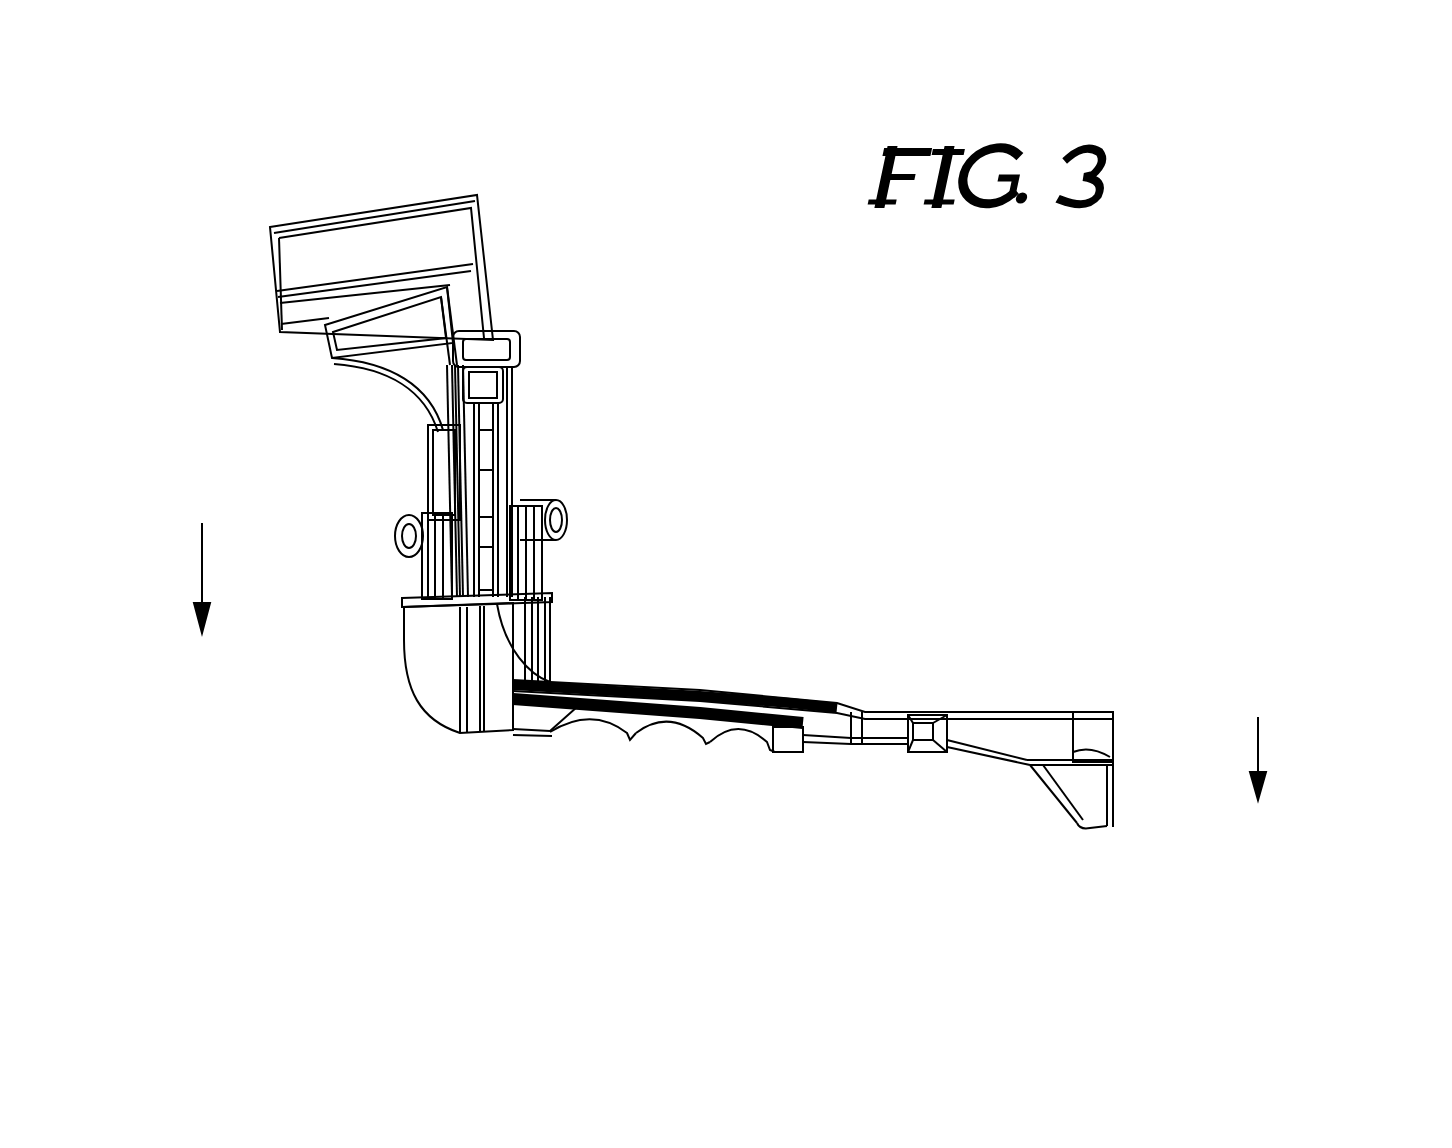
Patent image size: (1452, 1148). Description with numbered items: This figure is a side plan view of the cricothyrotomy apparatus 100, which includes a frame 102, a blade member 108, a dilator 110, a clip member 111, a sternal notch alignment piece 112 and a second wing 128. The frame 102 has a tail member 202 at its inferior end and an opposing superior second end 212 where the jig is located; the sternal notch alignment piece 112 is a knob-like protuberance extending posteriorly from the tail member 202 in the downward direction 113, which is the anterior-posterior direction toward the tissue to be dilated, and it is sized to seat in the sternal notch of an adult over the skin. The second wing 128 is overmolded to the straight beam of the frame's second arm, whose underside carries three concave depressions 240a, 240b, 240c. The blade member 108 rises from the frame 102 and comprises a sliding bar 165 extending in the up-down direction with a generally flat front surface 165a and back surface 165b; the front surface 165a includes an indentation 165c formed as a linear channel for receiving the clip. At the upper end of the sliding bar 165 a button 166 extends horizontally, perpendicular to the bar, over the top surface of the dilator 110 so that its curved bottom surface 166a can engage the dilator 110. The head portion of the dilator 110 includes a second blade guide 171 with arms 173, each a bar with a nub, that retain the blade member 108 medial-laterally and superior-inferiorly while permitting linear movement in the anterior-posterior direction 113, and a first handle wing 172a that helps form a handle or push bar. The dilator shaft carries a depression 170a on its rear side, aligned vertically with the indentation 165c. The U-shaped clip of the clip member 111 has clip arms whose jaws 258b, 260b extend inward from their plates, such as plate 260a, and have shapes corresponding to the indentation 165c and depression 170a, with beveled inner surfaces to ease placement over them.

The apparatus 100 is at (1045, 288).
The frame 102 is at (871, 762).
The blade member 108 is at (518, 432).
The dilator 110 is at (430, 466).
The clip member 111 is at (438, 508).
The sternal notch alignment piece 112 is at (1113, 790).
The downward direction 113 is at (203, 567).
The second wing 128 is at (693, 685).
The sliding bar 165 is at (500, 400).
The front surface 165a is at (508, 465).
The back surface 165b is at (440, 458).
The indentation 165c is at (537, 502).
The button 166 is at (385, 258).
The bottom surface 166a is at (303, 328).
The depression 170a is at (422, 517).
The second blade guide 171 is at (531, 337).
The first handle wing 172a is at (330, 362).
The arm 173 is at (490, 357).
The tail member 202 is at (1043, 732).
The second end 212 is at (346, 760).
The first concave depression 240a is at (600, 740).
The second concave depression 240b is at (667, 752).
The third concave depression 240c is at (742, 752).
The jaw 258b is at (553, 545).
The plate 260a is at (410, 607).
The jaw 260b is at (422, 570).